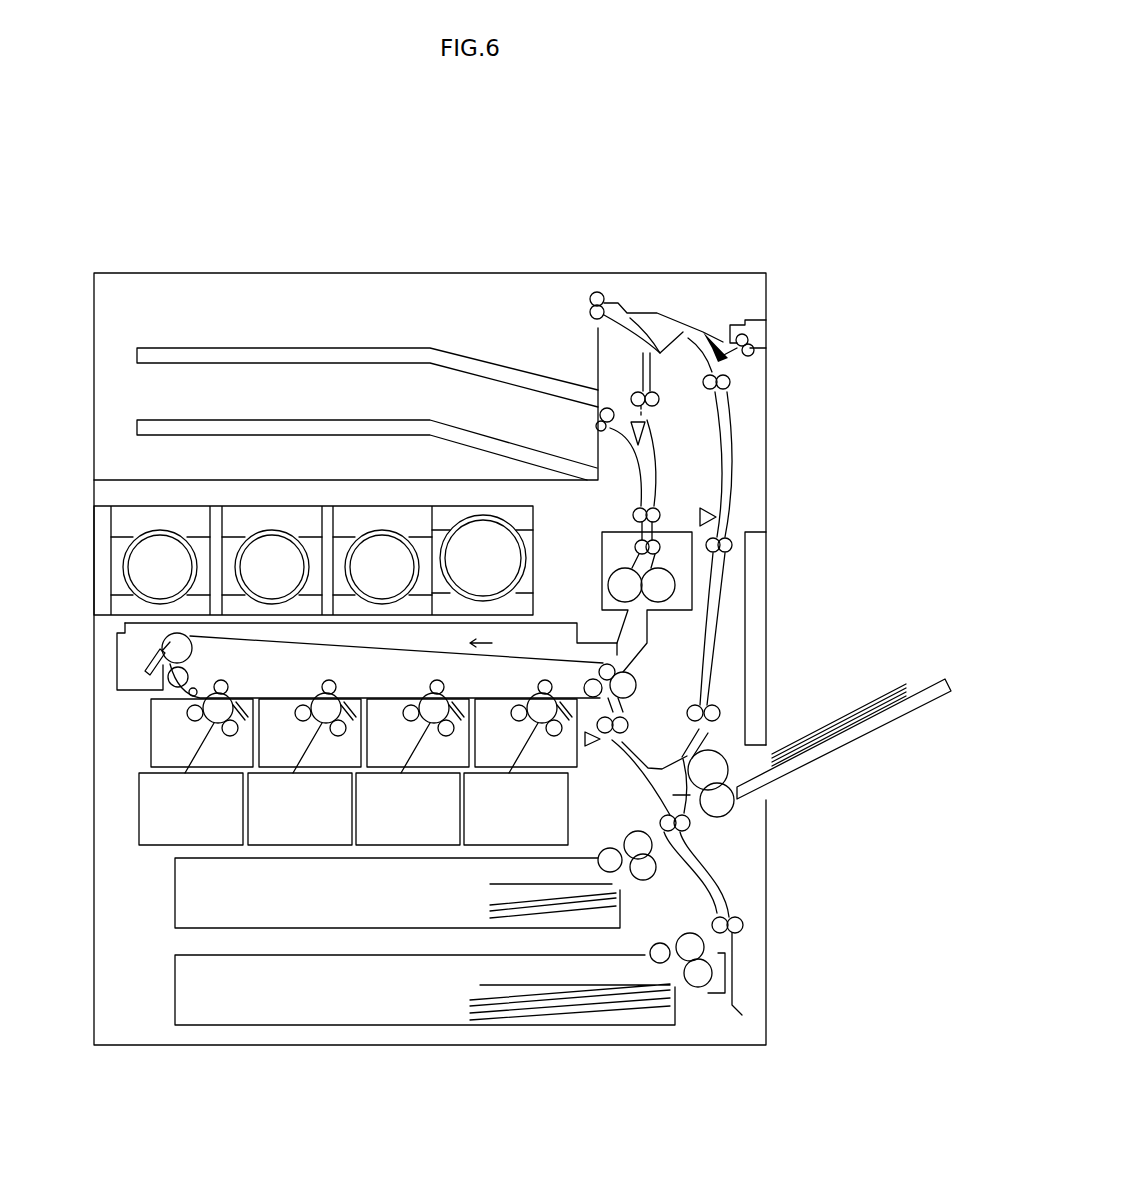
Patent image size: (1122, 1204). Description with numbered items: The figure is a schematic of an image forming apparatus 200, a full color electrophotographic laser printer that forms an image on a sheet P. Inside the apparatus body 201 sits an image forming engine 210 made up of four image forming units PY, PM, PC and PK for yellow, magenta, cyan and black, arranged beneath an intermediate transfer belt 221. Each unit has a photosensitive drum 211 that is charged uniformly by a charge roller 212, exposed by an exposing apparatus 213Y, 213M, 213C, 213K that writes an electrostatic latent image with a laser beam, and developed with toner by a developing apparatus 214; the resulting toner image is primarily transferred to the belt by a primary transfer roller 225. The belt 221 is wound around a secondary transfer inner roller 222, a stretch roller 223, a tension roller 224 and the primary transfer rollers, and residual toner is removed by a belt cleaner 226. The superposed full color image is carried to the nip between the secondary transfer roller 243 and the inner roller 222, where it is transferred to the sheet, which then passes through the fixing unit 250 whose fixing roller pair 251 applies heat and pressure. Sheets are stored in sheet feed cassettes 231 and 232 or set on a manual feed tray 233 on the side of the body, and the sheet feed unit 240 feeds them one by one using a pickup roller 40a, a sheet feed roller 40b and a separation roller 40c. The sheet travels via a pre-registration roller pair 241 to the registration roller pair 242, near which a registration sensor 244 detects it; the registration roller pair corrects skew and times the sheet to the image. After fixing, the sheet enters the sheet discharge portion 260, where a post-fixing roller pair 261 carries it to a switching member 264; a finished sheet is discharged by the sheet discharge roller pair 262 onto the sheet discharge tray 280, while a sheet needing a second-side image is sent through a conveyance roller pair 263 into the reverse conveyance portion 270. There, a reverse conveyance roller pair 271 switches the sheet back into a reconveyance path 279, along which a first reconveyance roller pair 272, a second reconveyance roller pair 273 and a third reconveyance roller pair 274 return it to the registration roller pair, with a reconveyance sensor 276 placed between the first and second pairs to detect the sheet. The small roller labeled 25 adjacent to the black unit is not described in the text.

The image forming apparatus 200 is at (738, 258).
The apparatus body 201 is at (767, 293).
The image forming engine 210 is at (137, 762).
The photosensitive drum 211 is at (212, 716).
The charge roller 212 is at (231, 736).
The exposing apparatus 213Y is at (163, 825).
The exposing apparatus 213M is at (270, 825).
The exposing apparatus 213C is at (379, 825).
The exposing apparatus 213K is at (545, 825).
The developing apparatus 214 is at (188, 716).
The intermediate transfer belt 221 is at (377, 643).
The secondary transfer inner roller 222 is at (607, 664).
The stretch roller 223 is at (162, 645).
The tension roller 224 is at (168, 680).
The primary transfer roller 225 is at (222, 680).
The belt cleaner 226 is at (146, 669).
The sheet feed cassette 231 is at (175, 897).
The sheet feed cassette 232 is at (175, 996).
The manual feed tray 233 is at (842, 753).
The sheet feed unit 240 is at (660, 846).
The pre-registration roller pair 241 is at (660, 823).
The registration roller pair 242 is at (628, 725).
The secondary transfer roller 243 is at (636, 683).
The registration sensor 244 is at (602, 746).
The fixing unit 250 is at (598, 553).
The fixing roller pair 251 is at (602, 596).
The sheet discharge portion 260 is at (616, 394).
The post-fixing roller pair 261 is at (657, 507).
The sheet discharge roller pair 262 is at (598, 416).
The conveyance roller pair 263 is at (658, 397).
The switching member 264 is at (656, 432).
The reverse conveyance portion 270 is at (742, 487).
The reverse conveyance roller pair 271 is at (598, 290).
The first reconveyance roller pair 272 is at (732, 383).
The second reconveyance roller pair 273 is at (733, 546).
The third reconveyance roller pair 274 is at (722, 713).
The reconveyance sensor 276 is at (706, 505).
The reconveyance path 279 is at (728, 425).
The sheet discharge tray 280 is at (360, 420).
The charging roller 25 is at (538, 694).
The pickup roller 40a is at (650, 950).
The sheet feed roller 40b is at (690, 933).
The separation roller 40c is at (698, 987).
The sheet P is at (495, 890).
The image forming unit PY is at (242, 694).
The image forming unit PM is at (353, 694).
The image forming unit PC is at (453, 694).
The image forming unit PK is at (567, 694).